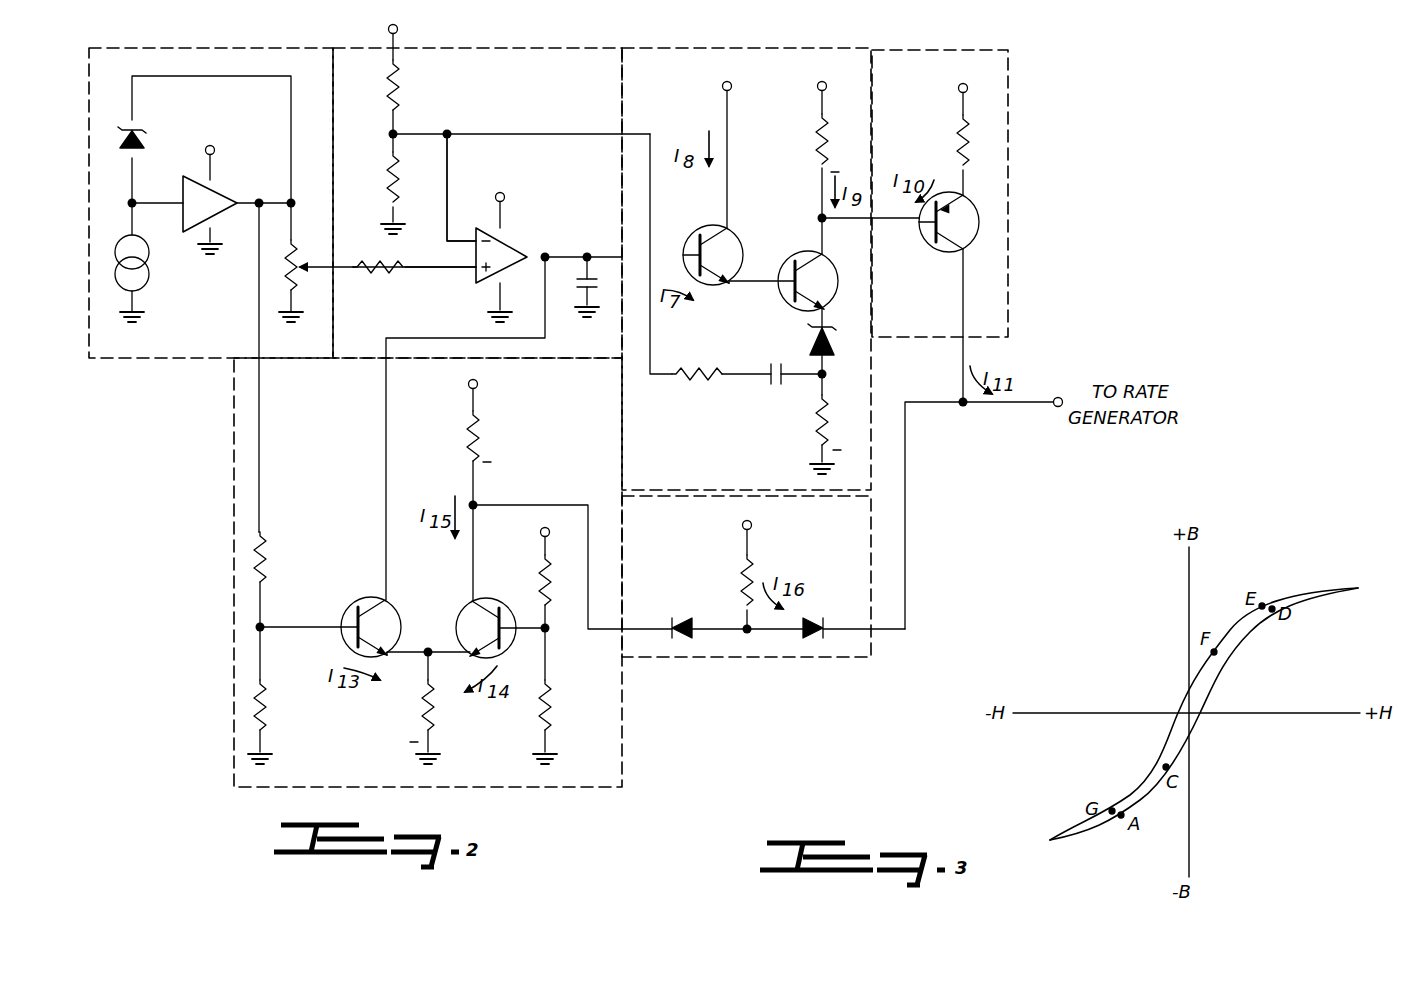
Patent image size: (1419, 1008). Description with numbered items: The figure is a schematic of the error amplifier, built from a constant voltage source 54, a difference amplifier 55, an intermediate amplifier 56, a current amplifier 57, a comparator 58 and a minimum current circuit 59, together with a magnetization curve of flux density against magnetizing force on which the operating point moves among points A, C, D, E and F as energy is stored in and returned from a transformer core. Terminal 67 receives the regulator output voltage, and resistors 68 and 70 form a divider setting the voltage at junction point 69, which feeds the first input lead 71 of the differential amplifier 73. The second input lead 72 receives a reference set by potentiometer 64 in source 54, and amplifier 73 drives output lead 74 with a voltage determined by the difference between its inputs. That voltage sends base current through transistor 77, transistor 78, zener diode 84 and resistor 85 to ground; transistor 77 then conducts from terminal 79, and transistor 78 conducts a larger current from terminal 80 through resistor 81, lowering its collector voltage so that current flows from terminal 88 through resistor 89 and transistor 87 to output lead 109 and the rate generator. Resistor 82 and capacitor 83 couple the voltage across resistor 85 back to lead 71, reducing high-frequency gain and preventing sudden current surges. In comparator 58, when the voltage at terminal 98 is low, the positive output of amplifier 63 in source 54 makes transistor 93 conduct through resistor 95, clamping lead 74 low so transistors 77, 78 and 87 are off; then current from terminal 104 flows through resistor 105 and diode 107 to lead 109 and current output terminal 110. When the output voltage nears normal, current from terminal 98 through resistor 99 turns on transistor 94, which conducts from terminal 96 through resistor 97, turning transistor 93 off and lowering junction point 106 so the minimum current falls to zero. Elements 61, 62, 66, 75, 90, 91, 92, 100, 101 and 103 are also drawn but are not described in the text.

The constant voltage source 54 is at (282, 49).
The difference amplifier 55 is at (612, 50).
The intermediate amplifier 56 is at (862, 50).
The current amplifier 57 is at (1002, 50).
The comparator 58 is at (234, 780).
The minimum current circuit 59 is at (838, 668).
The zener diode 61 is at (142, 130).
The current source 62 is at (144, 282).
The amplifier 63 is at (214, 193).
The potentiometer 64 is at (293, 282).
The resistor 66 is at (376, 280).
The terminal 67 is at (388, 32).
The resistor 68 is at (382, 94).
The junction point 69 is at (388, 134).
The resistor 70 is at (388, 174).
The first input lead 71 is at (448, 180).
The second input lead 72 is at (414, 274).
The differential amplifier 73 is at (508, 248).
The output lead 74 is at (562, 256).
The capacitor 75 is at (582, 286).
The transistor 77 is at (728, 238).
The transistor 78 is at (817, 270).
The terminal 79 is at (724, 87).
The terminal 80 is at (820, 87).
The resistor 81 is at (816, 134).
The resistor 82 is at (716, 366).
The capacitor 83 is at (770, 372).
The zener diode 84 is at (828, 328).
The resistor 85 is at (820, 426).
The transistor 87 is at (946, 250).
The terminal 88 is at (962, 92).
The resistor 89 is at (960, 156).
The resistor 90 is at (266, 562).
The junction 91 is at (264, 630).
The resistor 92 is at (264, 730).
The transistor 93 is at (387, 622).
The transistor 94 is at (456, 626).
The resistor 95 is at (434, 732).
The terminal 96 is at (468, 386).
The resistor 97 is at (468, 428).
The terminal 98 is at (540, 534).
The resistor 99 is at (544, 574).
The junction 100 is at (548, 636).
The resistor 101 is at (548, 720).
The diode 103 is at (670, 628).
The terminal 104 is at (742, 530).
The resistor 105 is at (746, 579).
The junction point 106 is at (752, 636).
The diode 107 is at (822, 628).
The output lead 109 is at (996, 402).
The current output terminal 110 is at (1052, 402).